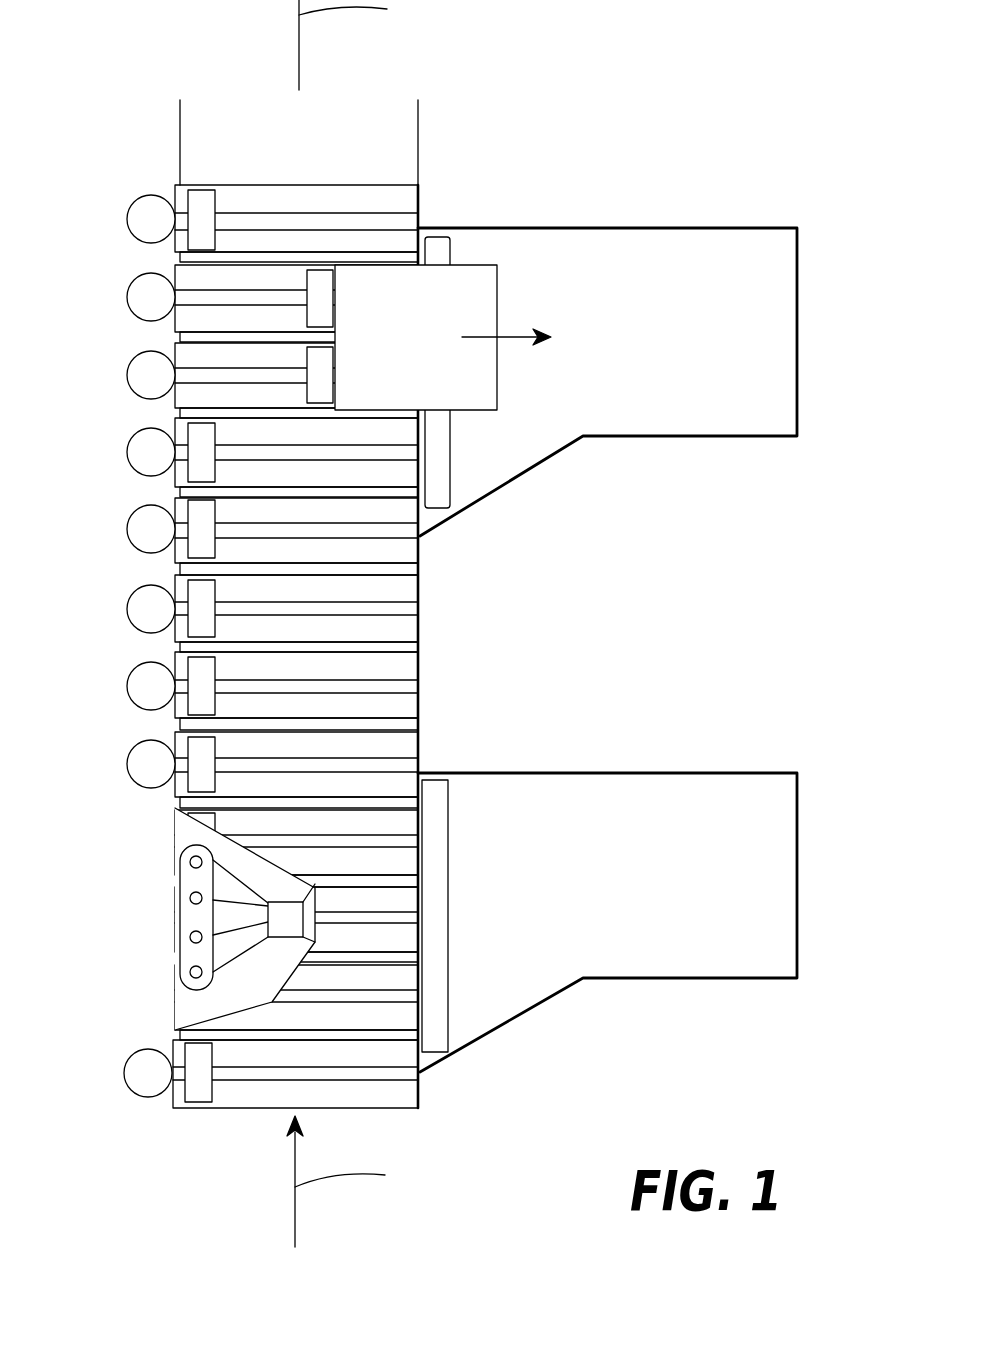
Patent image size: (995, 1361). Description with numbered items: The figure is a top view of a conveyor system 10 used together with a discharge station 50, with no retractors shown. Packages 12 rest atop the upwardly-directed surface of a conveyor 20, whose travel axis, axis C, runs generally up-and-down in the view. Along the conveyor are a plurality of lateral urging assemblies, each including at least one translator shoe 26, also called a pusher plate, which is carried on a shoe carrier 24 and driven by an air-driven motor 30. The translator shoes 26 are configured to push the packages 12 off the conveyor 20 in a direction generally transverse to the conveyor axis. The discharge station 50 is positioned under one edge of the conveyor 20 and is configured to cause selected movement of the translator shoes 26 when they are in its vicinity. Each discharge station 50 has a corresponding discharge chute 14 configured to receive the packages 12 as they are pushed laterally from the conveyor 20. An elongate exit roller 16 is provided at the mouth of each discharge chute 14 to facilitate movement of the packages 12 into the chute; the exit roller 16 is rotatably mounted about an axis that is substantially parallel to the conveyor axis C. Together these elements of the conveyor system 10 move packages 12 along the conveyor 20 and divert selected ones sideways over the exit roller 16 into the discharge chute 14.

The conveyor system 10 is at (635, 121).
The packages 12 is at (415, 345).
The discharge chute 14 is at (772, 330).
The exit roller 16 is at (433, 468).
The conveyor 20 is at (367, 128).
The shoe carrier 24 is at (245, 1093).
The translator shoe 26 is at (200, 200).
The air-driven motor 30 is at (137, 611).
The discharge station 50 is at (144, 864).